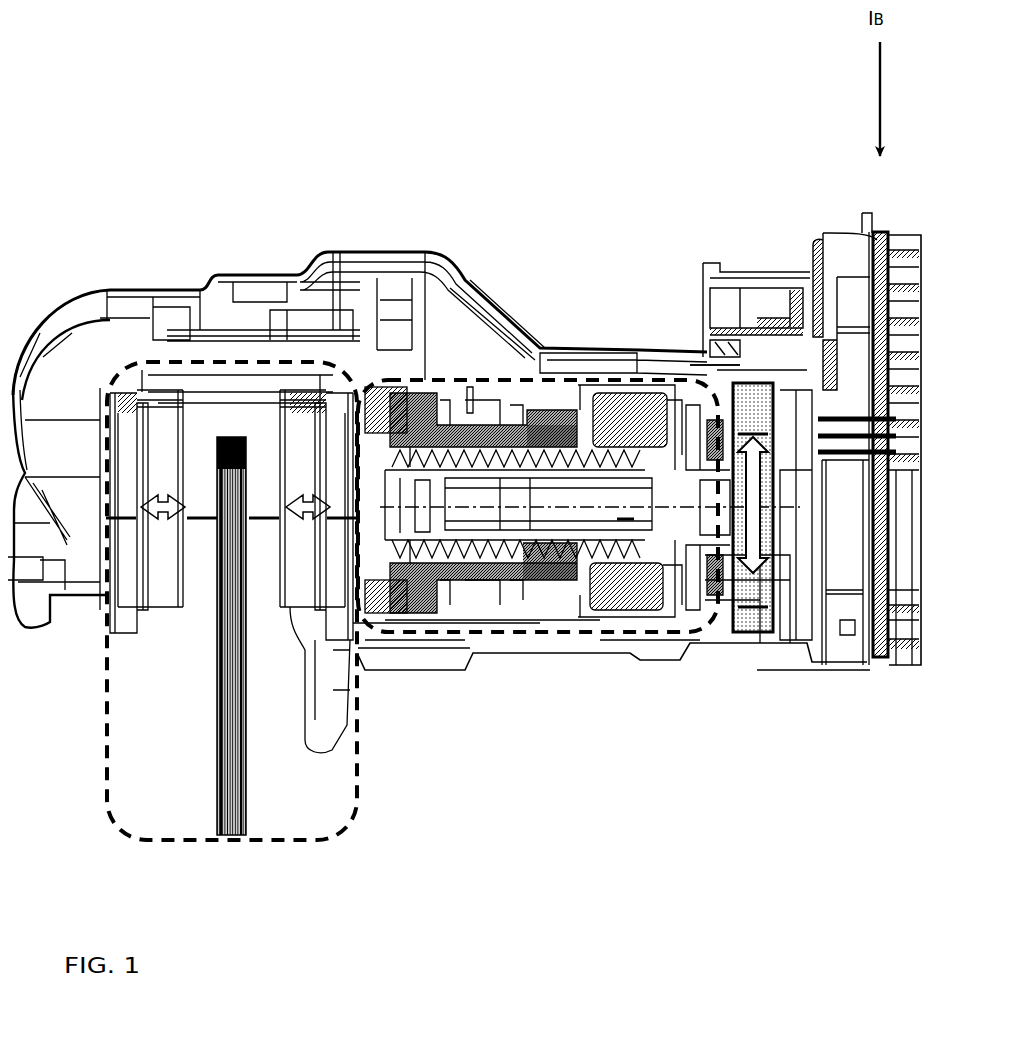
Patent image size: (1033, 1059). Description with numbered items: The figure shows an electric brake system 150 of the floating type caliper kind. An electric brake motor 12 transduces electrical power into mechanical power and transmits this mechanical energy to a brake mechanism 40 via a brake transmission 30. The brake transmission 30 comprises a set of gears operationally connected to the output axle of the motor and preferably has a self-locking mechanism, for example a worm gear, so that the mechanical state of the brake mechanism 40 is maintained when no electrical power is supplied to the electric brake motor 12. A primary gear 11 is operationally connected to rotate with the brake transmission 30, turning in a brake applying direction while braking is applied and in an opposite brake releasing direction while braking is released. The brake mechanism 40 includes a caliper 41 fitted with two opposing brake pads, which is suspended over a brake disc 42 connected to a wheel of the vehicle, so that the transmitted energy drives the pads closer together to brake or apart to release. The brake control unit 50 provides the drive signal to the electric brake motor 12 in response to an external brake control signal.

The electric brake system 150 is at (131, 116).
The brake mechanism 40 is at (232, 362).
The brake transmission 30 is at (542, 380).
The caliper 41 is at (275, 590).
The brake disc 42 is at (258, 679).
The primary gear 11 is at (729, 580).
The electric brake motor 12 is at (781, 585).
The brake control unit 50 is at (880, 662).